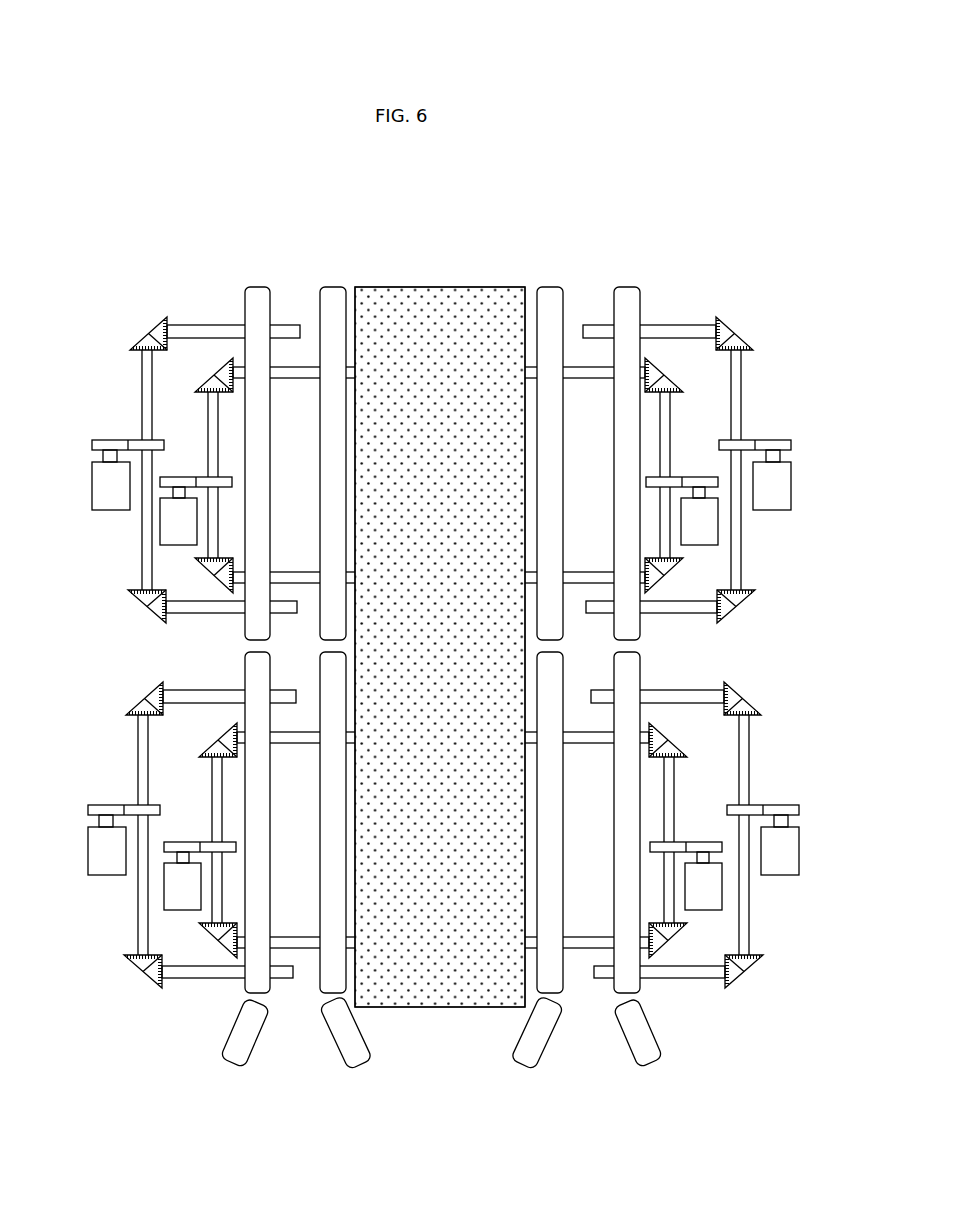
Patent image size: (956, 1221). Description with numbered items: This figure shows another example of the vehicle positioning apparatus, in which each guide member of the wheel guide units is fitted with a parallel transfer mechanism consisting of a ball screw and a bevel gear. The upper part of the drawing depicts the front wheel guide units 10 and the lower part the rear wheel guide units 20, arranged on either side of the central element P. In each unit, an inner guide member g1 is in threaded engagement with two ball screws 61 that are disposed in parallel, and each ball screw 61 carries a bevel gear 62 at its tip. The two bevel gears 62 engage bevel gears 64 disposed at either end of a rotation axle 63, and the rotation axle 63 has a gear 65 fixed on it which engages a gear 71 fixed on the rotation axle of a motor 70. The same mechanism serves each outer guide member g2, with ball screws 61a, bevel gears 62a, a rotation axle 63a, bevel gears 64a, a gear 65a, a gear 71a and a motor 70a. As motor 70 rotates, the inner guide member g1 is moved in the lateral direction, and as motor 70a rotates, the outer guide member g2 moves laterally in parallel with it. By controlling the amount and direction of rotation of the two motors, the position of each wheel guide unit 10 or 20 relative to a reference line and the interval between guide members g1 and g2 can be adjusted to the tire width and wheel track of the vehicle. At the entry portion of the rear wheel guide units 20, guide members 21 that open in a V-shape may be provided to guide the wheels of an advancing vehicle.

The front wheel guide unit 10 is at (130, 257).
The rear wheel guide unit 20 is at (123, 1067).
The guide member 21 is at (228, 1066).
The ball screw 61 is at (304, 380).
The ball screw 61a is at (173, 323).
The bevel gear 62 is at (226, 377).
The bevel gear 62a is at (157, 322).
The rotation axle 63 is at (217, 440).
The rotation axle 63a is at (142, 368).
The bevel gear 64 is at (200, 385).
The bevel gear 64a is at (136, 344).
The gear 65 is at (233, 481).
The gear 65a is at (135, 440).
The motor 70 is at (160, 522).
The motor 70a is at (92, 495).
The gear 71 is at (174, 476).
The gear 71a is at (92, 441).
The inner guide member g1 is at (332, 285).
The outer guide member g2 is at (256, 285).
The printing plate P is at (408, 285).